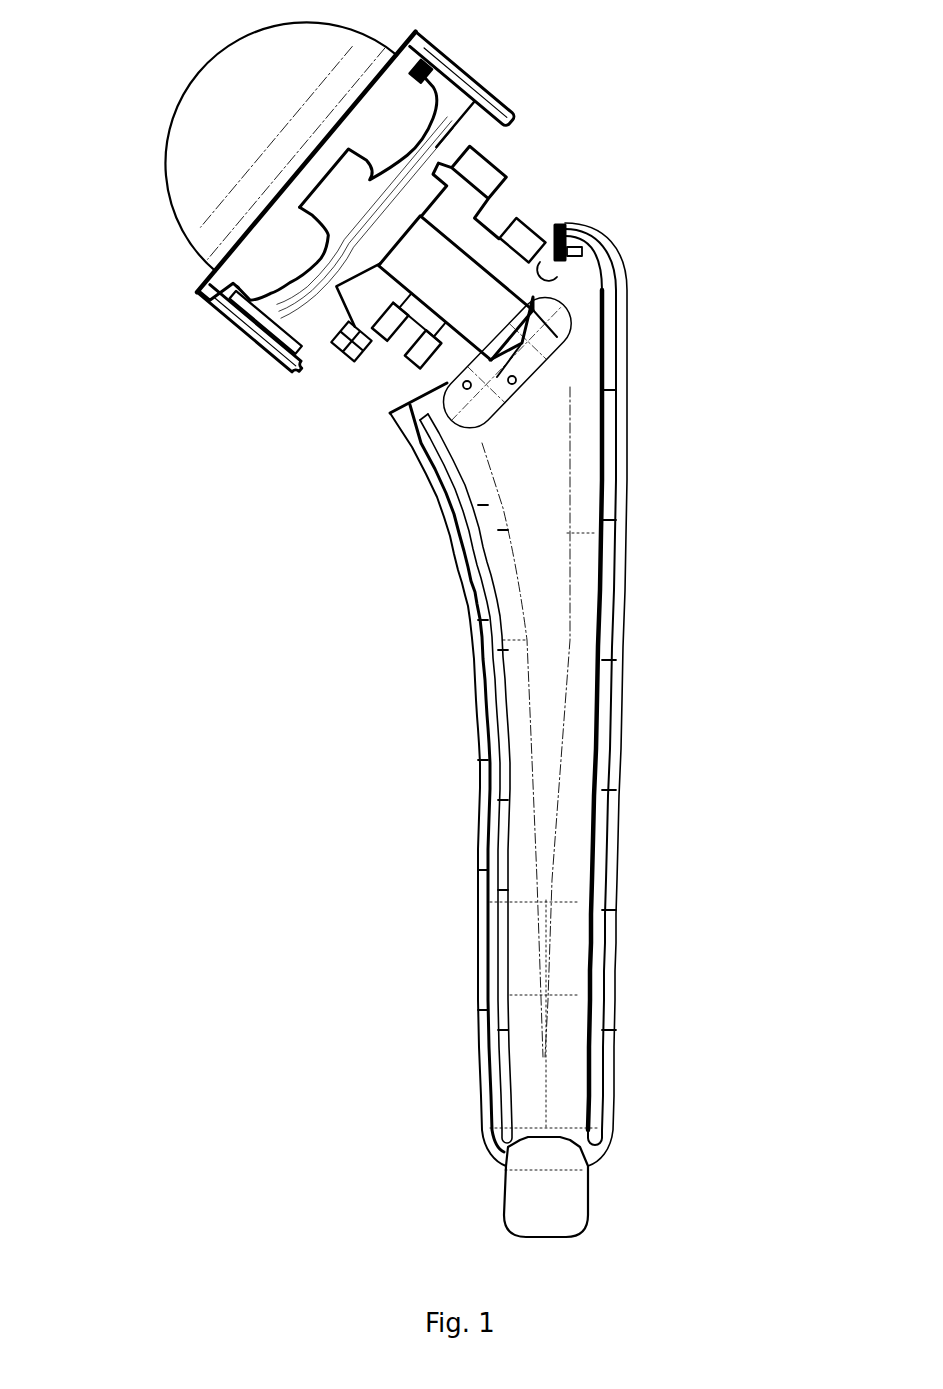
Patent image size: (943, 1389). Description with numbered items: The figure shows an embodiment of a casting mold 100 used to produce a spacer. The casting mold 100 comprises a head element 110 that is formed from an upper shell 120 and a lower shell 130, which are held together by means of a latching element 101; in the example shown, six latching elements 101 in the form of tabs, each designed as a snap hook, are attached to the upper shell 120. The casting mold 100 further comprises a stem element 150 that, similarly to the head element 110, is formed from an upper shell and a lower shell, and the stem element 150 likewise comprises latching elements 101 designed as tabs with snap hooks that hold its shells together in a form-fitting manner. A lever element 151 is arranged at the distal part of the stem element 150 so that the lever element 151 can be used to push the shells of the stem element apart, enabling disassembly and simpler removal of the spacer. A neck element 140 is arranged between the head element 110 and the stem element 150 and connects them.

The casting mold 100 is at (660, 128).
The latching element 101 is at (277, 257).
The head element 110 is at (178, 285).
The upper shell 120 is at (167, 100).
The lower shell 130 is at (437, 150).
The neck element 140 is at (362, 397).
The stem element 150 is at (410, 887).
The lever element 151 is at (602, 1200).